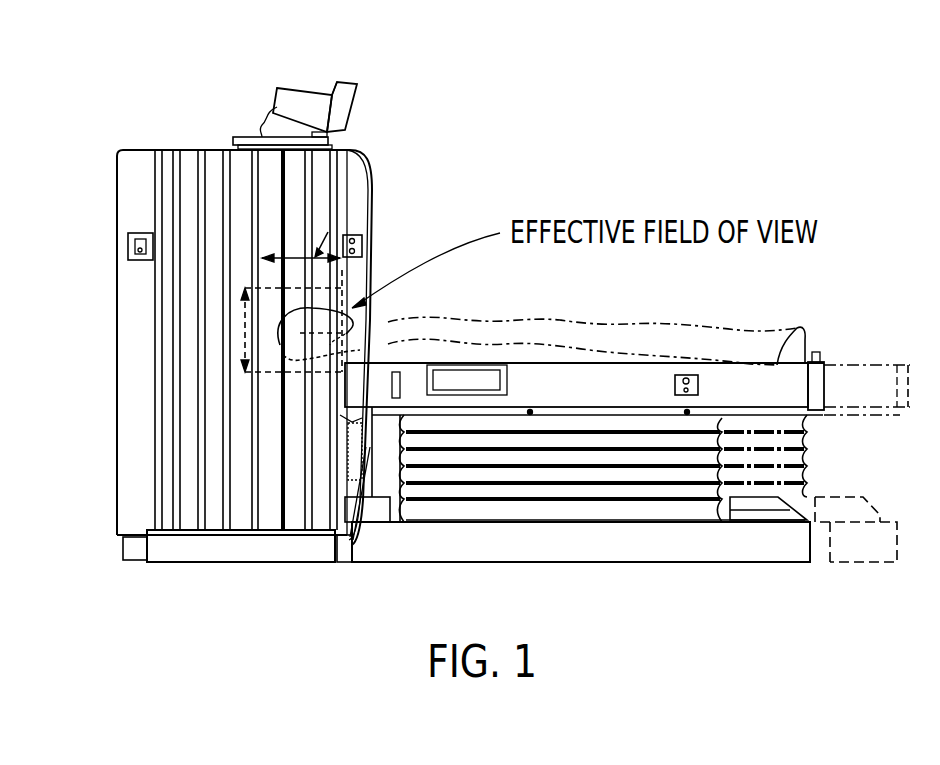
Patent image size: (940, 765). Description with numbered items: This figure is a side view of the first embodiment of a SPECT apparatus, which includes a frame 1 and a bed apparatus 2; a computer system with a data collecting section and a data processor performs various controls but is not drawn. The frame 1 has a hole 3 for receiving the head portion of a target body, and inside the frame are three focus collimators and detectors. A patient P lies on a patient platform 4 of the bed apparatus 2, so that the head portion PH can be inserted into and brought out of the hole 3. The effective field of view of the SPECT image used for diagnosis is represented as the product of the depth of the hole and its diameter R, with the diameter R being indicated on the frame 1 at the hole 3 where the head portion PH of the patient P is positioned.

The frame 1 is at (192, 148).
The bed apparatus 2 is at (807, 482).
The hole 3 is at (330, 272).
The patient platform 4 is at (806, 362).
The patient P is at (490, 318).
The head portion PH is at (340, 337).
The diameter R is at (300, 333).